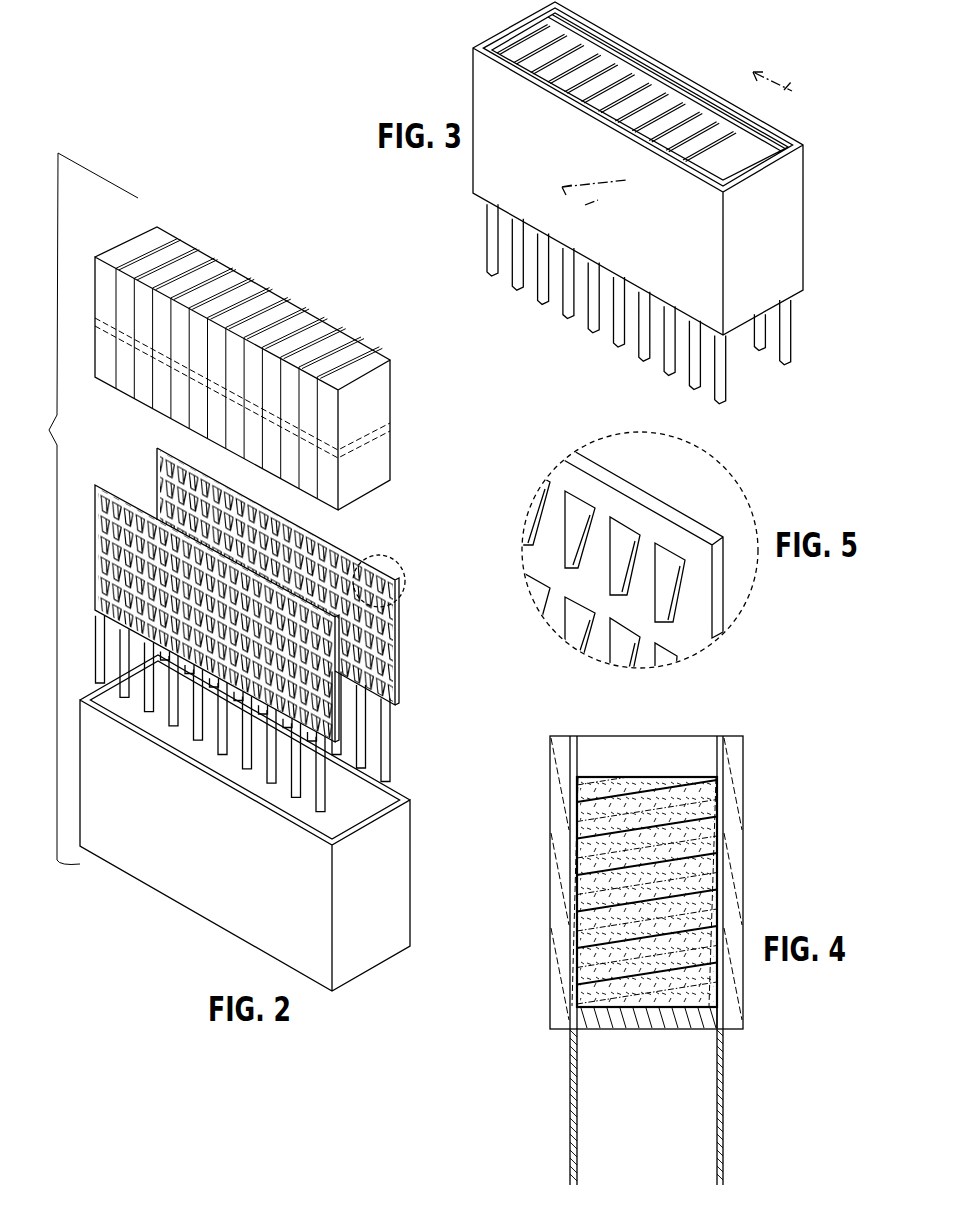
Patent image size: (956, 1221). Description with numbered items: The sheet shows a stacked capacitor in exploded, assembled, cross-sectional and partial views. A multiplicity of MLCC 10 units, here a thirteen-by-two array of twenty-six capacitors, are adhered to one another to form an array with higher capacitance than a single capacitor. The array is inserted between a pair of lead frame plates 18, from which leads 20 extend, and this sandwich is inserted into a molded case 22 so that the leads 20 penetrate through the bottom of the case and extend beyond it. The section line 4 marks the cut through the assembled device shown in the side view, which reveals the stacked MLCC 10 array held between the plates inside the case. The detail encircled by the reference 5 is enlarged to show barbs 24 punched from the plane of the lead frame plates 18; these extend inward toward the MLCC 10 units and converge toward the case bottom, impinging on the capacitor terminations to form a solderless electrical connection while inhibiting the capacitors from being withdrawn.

In FIG. 2, the MLCC 10 is at (277, 312).
In FIG. 3, the MLCC 10 is at (637, 100).
In FIG. 4, the MLCC 10 is at (640, 777).
In FIG. 2, the lead frame plates 18 is at (142, 467).
In FIG. 3, the lead frame plates 18 is at (637, 66).
In FIG. 5, the lead frame plates 18 is at (610, 480).
In FIG. 4, the lead frame plates 18 is at (717, 828).
In FIG. 2, the leads 20 is at (97, 658).
In FIG. 3, the leads 20 is at (563, 307).
In FIG. 4, the leads 20 is at (571, 1140).
In FIG. 2, the molded case 22 is at (188, 865).
In FIG. 3, the molded case 22 is at (773, 267).
In FIG. 4, the molded case 22 is at (550, 793).
In FIG. 2, the barbs 24 is at (382, 668).
In FIG. 5, the barbs 24 is at (667, 567).
In FIG. 2, the detail area shown in FIG. 5 is at (397, 573).
In FIG. 3, the section line 4- 4 is at (686, 151).